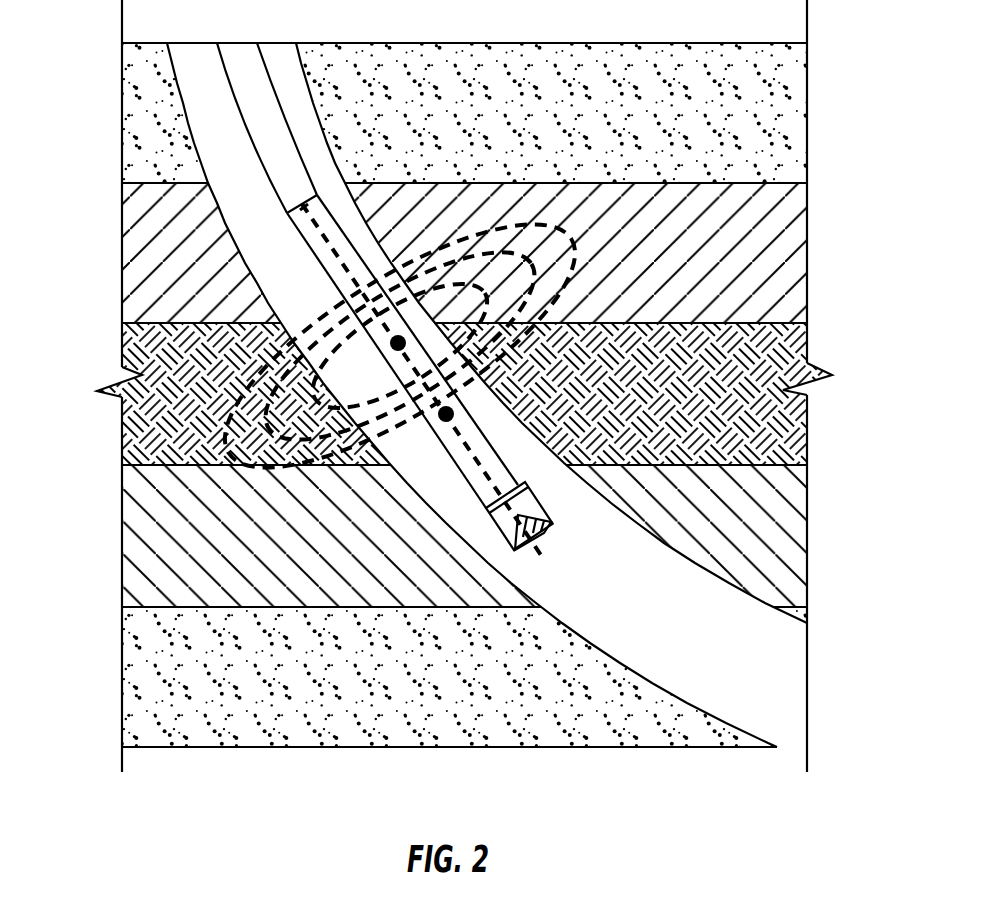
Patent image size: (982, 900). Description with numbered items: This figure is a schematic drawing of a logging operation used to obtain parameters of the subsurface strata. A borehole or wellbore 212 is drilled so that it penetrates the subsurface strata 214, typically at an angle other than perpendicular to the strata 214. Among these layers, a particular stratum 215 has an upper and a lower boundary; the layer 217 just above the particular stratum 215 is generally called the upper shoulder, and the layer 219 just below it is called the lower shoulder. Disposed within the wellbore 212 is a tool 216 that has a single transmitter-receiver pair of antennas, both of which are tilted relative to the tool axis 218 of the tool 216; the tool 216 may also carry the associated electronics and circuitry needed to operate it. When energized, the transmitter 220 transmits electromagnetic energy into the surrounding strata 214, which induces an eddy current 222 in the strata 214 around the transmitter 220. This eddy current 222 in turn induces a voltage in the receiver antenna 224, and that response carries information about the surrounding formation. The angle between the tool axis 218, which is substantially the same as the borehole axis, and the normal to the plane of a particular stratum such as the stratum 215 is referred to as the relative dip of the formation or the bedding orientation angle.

The wellbore 212 is at (807, 603).
The subsurface strata 214 is at (122, 666).
The particular stratum 215 is at (122, 536).
The tool 216 is at (333, 198).
The layer (upper shoulder) 217 is at (122, 440).
The tool axis 218 is at (545, 561).
The layer (lower shoulder) 219 is at (555, 747).
The transmitter 220 is at (398, 343).
The eddy current 222 is at (567, 227).
The receiver antenna 224 is at (446, 414).